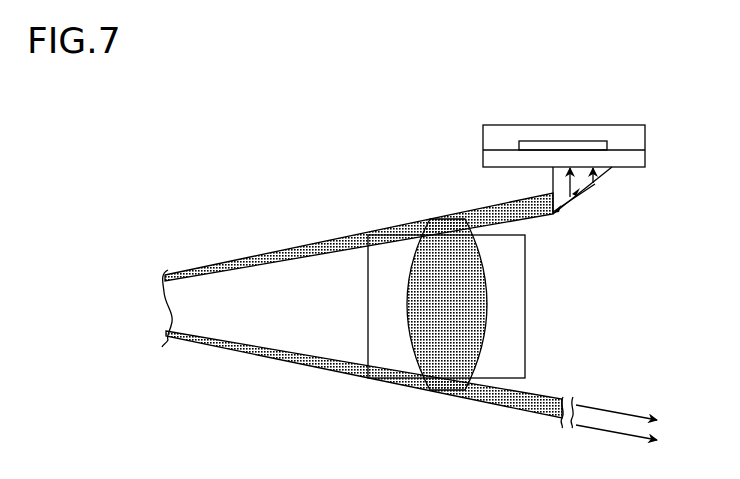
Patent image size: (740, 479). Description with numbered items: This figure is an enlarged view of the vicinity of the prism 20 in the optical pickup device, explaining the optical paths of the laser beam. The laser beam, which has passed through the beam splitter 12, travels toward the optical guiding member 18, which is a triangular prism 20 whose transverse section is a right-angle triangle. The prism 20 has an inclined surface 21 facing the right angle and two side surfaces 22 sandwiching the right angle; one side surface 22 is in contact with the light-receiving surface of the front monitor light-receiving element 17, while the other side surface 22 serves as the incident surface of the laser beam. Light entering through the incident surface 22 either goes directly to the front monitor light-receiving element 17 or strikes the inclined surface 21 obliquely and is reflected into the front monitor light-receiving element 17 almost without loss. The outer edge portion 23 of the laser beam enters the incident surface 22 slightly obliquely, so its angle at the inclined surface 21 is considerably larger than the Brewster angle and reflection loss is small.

The beam splitter 12 is at (508, 356).
The front monitor light-receiving element 17 is at (507, 125).
The optical guiding member 18 is at (595, 243).
The triangular prism 20 is at (605, 172).
The inclined surface 21 is at (580, 200).
The side surface 22 is at (577, 167).
The outer edge portion of the laser beam 23 is at (303, 245).